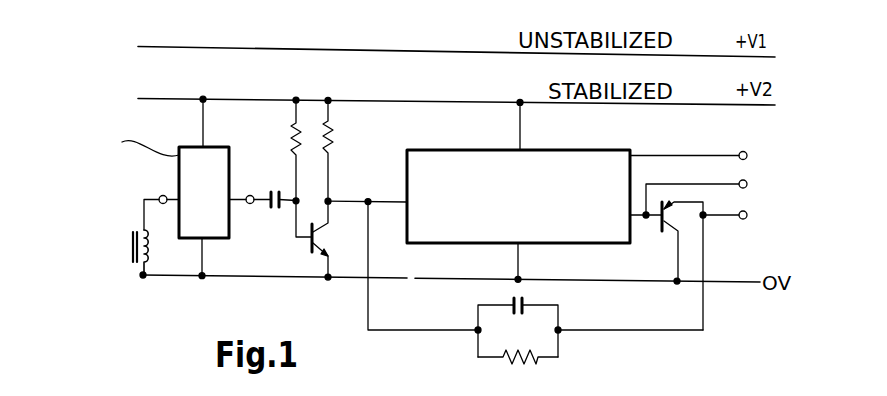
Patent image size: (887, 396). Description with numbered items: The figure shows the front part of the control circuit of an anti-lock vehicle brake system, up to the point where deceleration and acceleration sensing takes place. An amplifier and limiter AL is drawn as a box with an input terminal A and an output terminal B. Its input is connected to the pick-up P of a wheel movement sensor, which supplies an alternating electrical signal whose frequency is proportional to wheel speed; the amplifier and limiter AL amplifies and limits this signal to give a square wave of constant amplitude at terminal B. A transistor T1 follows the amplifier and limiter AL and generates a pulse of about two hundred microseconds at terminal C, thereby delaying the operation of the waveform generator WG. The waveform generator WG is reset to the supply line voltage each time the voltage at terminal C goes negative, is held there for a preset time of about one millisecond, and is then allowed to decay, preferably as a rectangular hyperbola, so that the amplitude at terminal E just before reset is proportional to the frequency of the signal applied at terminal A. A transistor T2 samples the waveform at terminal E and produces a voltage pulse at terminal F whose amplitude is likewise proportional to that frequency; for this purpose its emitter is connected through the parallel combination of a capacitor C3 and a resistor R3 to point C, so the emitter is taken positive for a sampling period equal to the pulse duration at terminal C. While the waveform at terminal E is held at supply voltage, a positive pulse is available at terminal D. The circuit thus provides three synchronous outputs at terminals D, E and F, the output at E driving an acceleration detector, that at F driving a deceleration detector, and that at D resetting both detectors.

The amplifier and limiter AL is at (230, 158).
The input terminal A is at (160, 195).
The output terminal B is at (250, 195).
The terminal C is at (368, 198).
The pick-up P is at (130, 246).
The transistor T1 is at (318, 239).
The transistor T2 is at (674, 228).
The waveform generator WG is at (553, 152).
The terminal D is at (697, 156).
The terminal E is at (704, 194).
The terminal F is at (732, 216).
The capacitor C3 is at (512, 308).
The resistor R3 is at (518, 370).